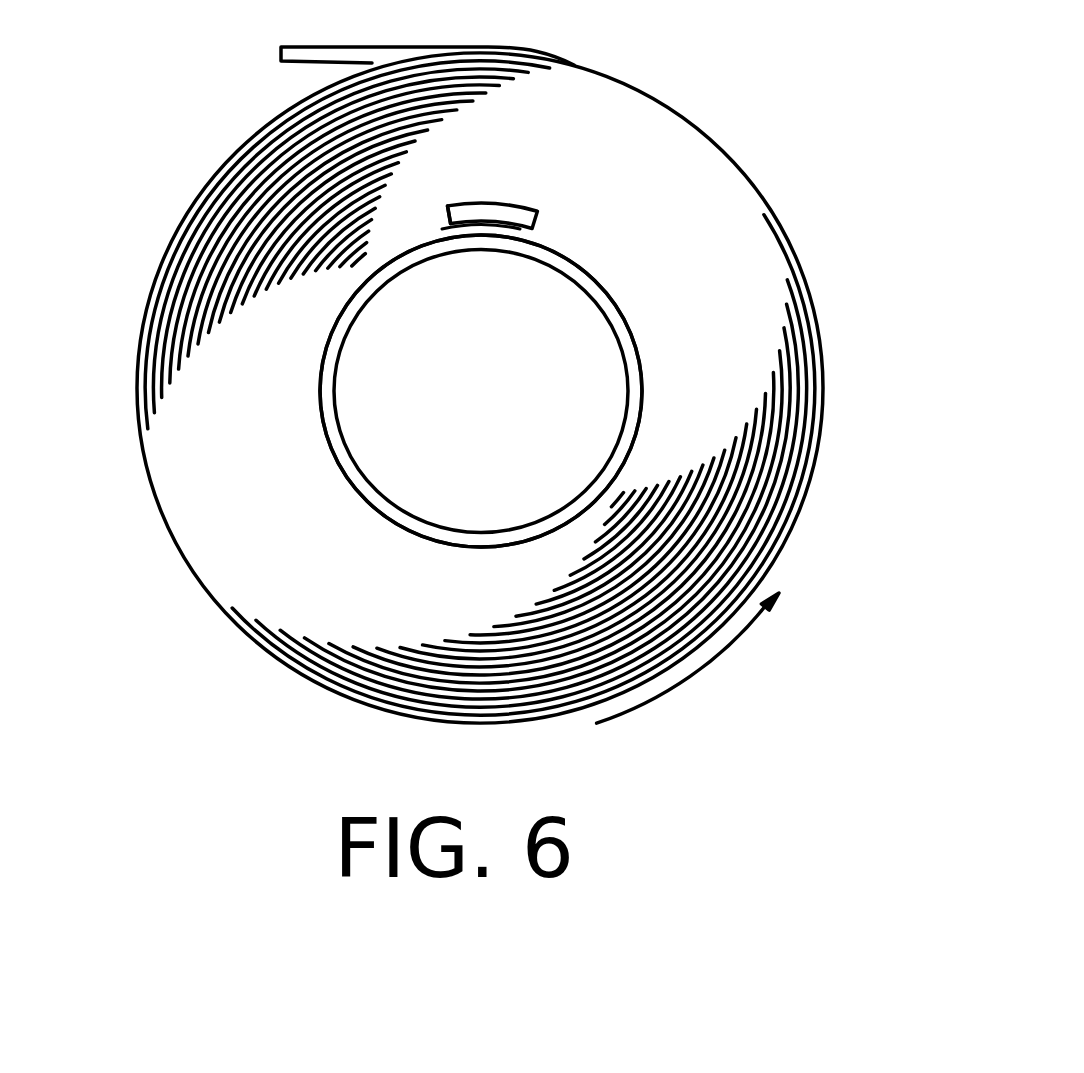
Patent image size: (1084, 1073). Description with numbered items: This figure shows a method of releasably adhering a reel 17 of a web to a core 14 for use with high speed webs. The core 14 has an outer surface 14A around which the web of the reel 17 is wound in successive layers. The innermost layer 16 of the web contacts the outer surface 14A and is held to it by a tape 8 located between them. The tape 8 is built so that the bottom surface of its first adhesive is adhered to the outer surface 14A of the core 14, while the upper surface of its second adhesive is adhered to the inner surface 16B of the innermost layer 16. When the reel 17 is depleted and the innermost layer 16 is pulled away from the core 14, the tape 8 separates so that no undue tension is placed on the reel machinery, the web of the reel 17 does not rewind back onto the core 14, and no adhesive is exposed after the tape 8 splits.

The tape 8 is at (492, 228).
The core 14 is at (627, 315).
The outer surface 14A is at (580, 257).
The innermost layer 16 is at (462, 208).
The inner surface 16B is at (450, 224).
The reel 17 is at (297, 672).